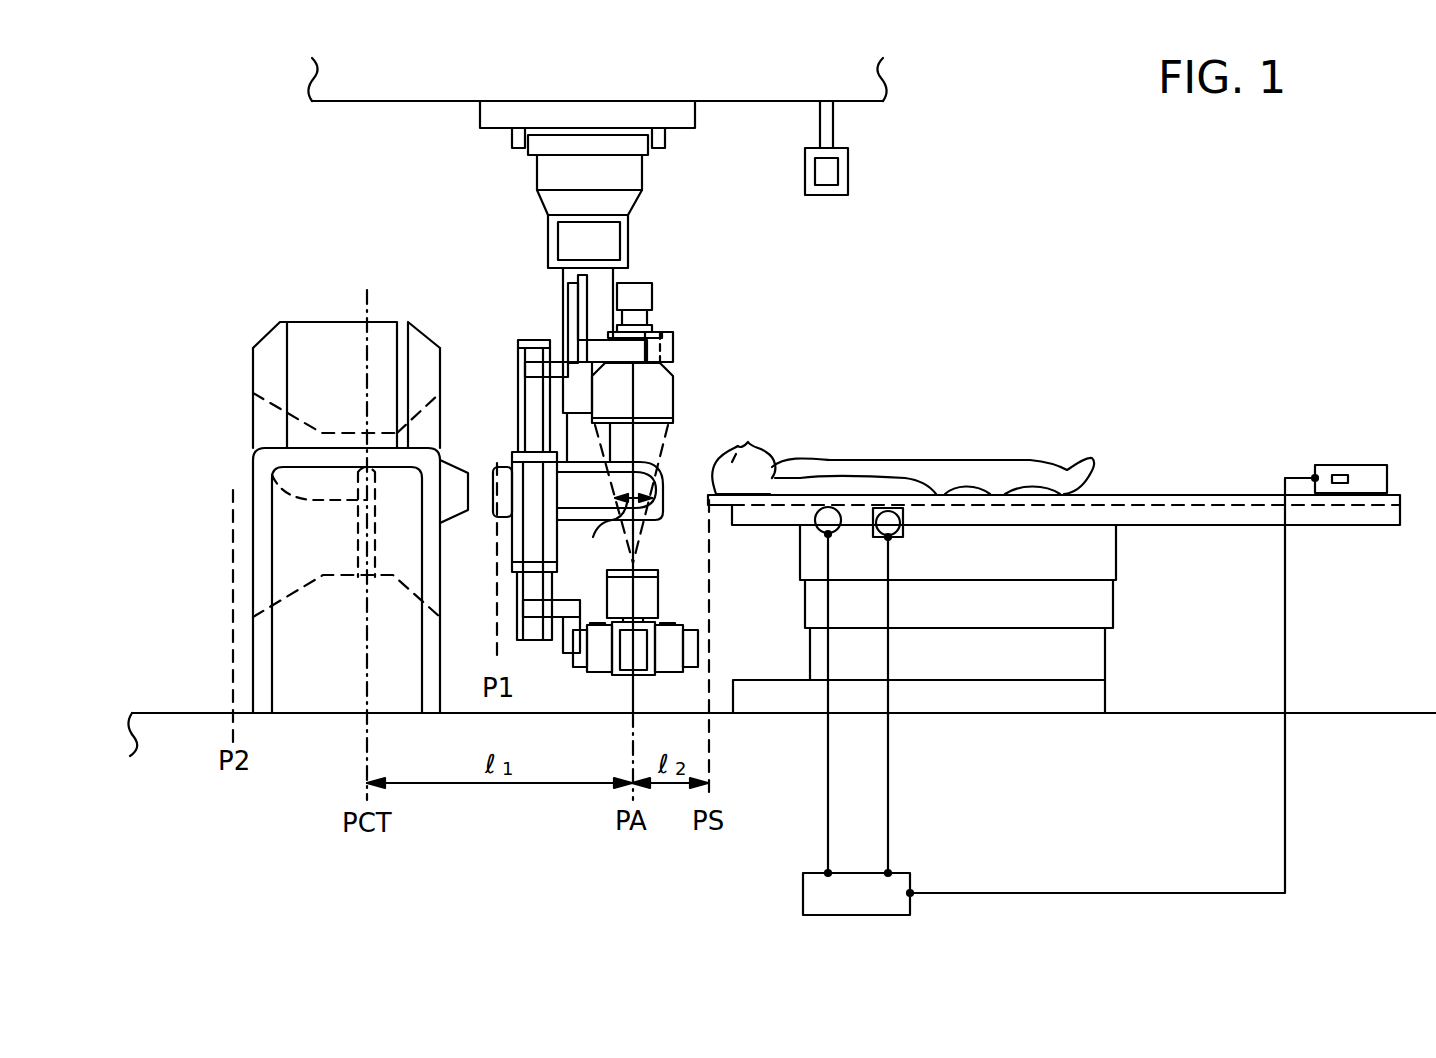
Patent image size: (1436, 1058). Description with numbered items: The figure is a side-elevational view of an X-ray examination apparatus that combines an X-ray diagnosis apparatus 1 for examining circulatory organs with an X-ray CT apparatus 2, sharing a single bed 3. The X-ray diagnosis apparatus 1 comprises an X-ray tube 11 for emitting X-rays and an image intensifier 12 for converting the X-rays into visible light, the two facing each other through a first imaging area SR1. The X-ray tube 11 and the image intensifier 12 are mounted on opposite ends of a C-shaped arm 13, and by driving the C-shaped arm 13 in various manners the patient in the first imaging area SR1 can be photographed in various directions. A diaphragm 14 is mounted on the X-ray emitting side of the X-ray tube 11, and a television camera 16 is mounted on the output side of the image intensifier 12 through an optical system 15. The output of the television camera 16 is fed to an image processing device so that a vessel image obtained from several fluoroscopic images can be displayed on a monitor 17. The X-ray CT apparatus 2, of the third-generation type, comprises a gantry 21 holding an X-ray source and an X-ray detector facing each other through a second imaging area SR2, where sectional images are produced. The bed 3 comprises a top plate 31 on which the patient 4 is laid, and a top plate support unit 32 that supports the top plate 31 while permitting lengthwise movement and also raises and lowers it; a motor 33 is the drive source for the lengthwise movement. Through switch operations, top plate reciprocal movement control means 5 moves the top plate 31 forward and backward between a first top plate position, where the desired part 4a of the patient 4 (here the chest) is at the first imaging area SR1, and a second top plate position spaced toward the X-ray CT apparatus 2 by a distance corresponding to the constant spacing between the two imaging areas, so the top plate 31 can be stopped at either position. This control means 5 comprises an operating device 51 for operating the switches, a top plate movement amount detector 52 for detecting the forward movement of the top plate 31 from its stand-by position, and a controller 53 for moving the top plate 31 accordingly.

The X-ray diagnosis apparatus 1 is at (692, 450).
The X-ray CT apparatus 2 is at (318, 473).
The bed 3 is at (1059, 548).
The patient 4 is at (903, 439).
The desired part 4a is at (836, 458).
The top plate reciprocal movement control means 5 is at (1012, 709).
The X-ray tube 11 is at (647, 675).
The image intensifier 12 is at (680, 385).
The C-shaped arm 13 is at (515, 388).
The diaphragm 14 is at (650, 597).
The optical system 15 is at (650, 332).
The television camera 16 is at (640, 283).
The monitor 17 is at (849, 172).
The gantry 21 is at (315, 322).
The top plate 31 is at (1126, 495).
The top plate support unit 32 is at (1113, 598).
The motor 33 is at (905, 537).
The operating device 51 is at (1365, 465).
The top plate movement amount detector 52 is at (812, 512).
The controller 53 is at (903, 873).
The first imaging area SR1 is at (653, 443).
The second imaging area SR2 is at (272, 475).